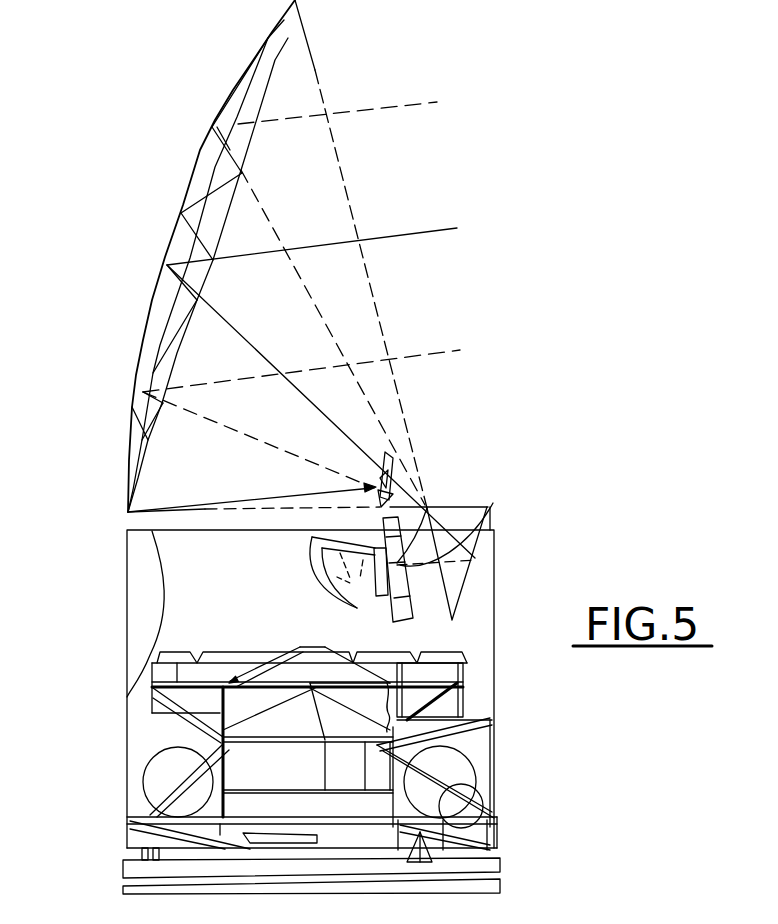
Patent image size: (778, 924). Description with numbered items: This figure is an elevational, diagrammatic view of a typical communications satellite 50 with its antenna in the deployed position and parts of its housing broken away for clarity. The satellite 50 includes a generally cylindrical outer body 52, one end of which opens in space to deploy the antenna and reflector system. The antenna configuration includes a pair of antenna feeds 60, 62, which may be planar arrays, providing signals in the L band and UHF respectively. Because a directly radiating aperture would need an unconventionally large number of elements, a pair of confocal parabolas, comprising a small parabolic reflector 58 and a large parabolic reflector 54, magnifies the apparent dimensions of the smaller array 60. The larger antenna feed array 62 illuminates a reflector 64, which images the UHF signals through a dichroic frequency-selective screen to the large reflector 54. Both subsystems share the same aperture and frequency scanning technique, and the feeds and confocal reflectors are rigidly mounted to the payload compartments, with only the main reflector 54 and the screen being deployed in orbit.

The communications satellite 50 is at (562, 450).
The outer body 52 is at (495, 675).
The large parabolic reflector 54 is at (167, 250).
The small parabolic reflector 58 is at (331, 571).
The antenna feed 60 is at (427, 508).
The antenna feed 62 is at (481, 520).
The reflector 64 is at (494, 546).